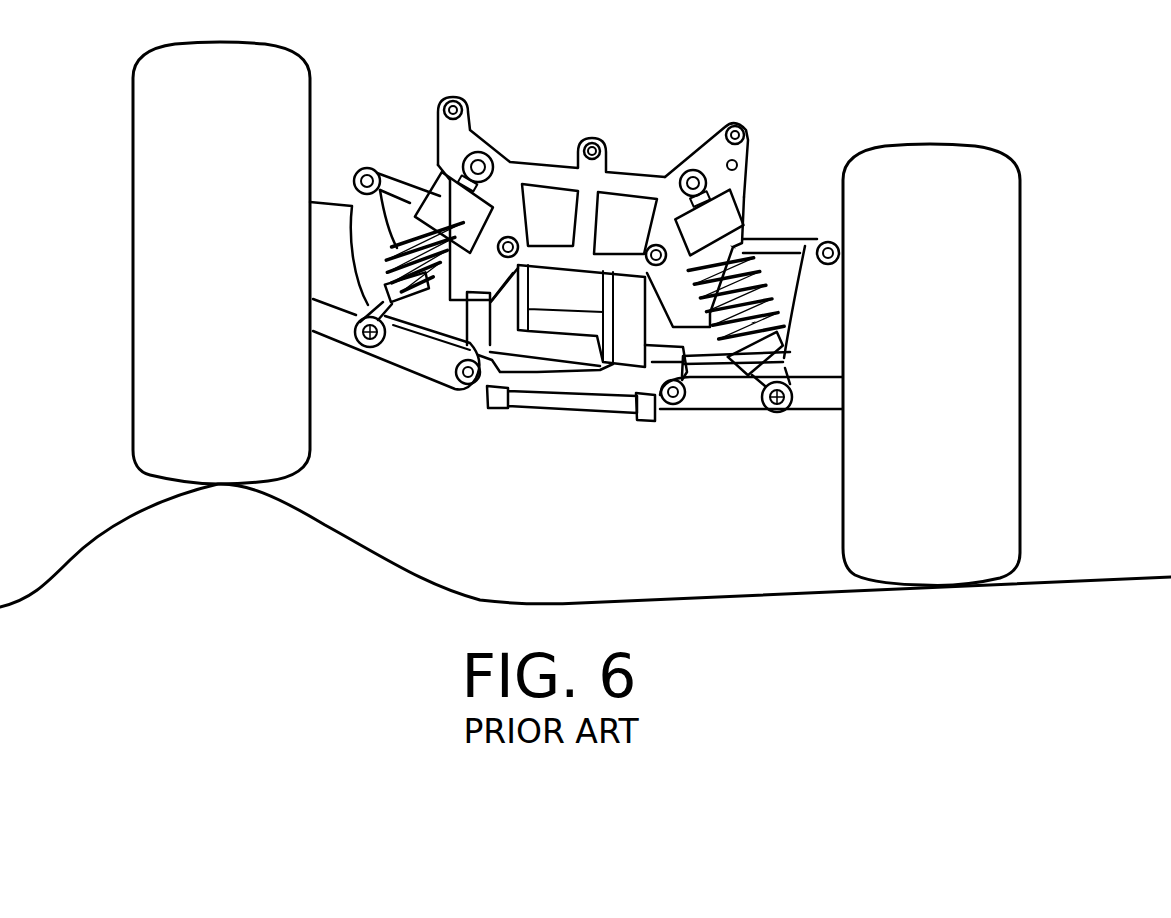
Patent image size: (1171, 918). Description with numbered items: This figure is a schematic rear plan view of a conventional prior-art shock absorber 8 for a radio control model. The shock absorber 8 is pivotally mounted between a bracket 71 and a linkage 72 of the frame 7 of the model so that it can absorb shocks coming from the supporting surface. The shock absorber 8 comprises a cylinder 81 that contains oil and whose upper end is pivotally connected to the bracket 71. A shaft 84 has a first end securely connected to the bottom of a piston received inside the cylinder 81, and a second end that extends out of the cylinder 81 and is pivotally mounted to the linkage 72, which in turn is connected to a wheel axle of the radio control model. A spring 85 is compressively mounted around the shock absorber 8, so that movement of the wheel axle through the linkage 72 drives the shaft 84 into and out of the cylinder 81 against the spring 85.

The frame 7 is at (626, 165).
The bracket 71 is at (745, 180).
The linkage 72 is at (420, 357).
The shock absorber 8 is at (408, 207).
The cylinder 81 is at (735, 248).
The shaft 84 is at (723, 353).
The spring 85 is at (752, 322).